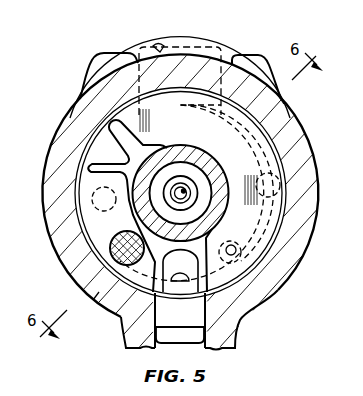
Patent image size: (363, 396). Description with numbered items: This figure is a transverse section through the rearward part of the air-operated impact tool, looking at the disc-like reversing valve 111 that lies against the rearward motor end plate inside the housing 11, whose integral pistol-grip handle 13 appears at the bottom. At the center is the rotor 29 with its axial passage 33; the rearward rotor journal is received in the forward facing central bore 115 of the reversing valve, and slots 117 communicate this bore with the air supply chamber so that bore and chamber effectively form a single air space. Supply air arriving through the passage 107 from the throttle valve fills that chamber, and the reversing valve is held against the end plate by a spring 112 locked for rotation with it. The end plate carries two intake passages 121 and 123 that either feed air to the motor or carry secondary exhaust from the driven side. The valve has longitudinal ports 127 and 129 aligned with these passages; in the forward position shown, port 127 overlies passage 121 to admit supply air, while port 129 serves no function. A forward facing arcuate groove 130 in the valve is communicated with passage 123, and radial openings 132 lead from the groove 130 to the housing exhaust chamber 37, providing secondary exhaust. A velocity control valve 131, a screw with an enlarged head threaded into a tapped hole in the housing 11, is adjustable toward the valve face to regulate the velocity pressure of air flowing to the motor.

The housing 11 is at (62, 117).
The pistol-grip handle 13 is at (235, 348).
The rotor 29 is at (191, 181).
The axial passage 33 is at (186, 190).
The chamber 37 is at (156, 49).
The passage 107 is at (193, 335).
The reversing valve 111 is at (281, 100).
The spring 112 is at (82, 167).
The central bore 115 is at (182, 164).
The slots 117 is at (167, 146).
The intake passage 121 is at (120, 236).
The intake passage 123 is at (236, 249).
The longitudinal port 127 is at (93, 299).
The longitudinal port 129 is at (181, 284).
The arcuate groove 130 is at (93, 198).
The velocity control valve 131 is at (110, 252).
The radial openings 132 is at (188, 105).